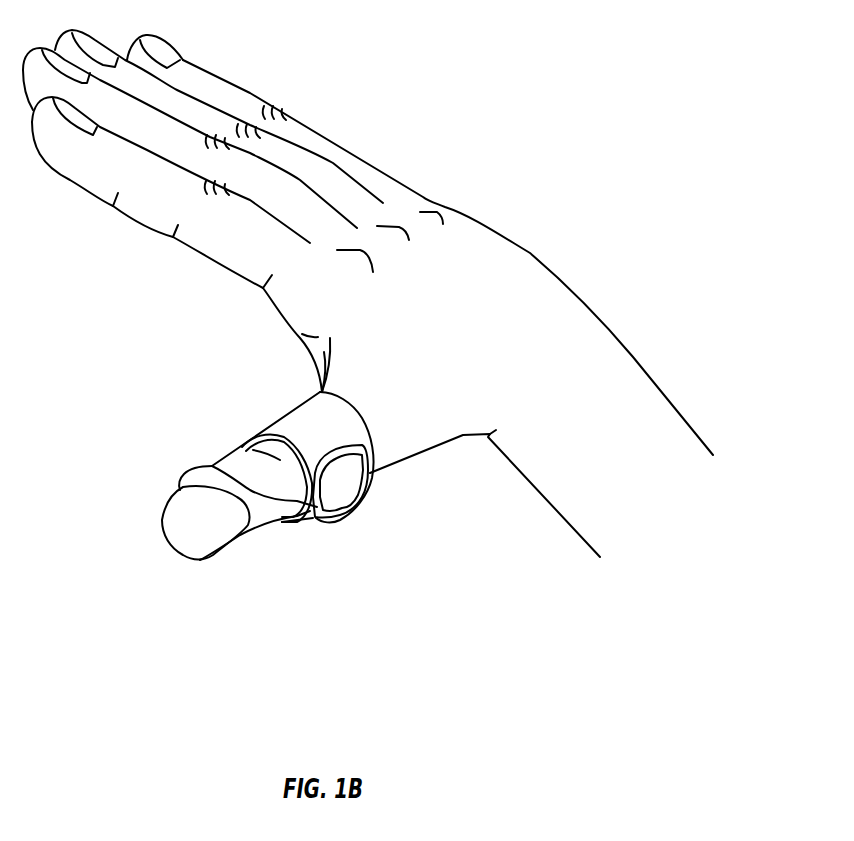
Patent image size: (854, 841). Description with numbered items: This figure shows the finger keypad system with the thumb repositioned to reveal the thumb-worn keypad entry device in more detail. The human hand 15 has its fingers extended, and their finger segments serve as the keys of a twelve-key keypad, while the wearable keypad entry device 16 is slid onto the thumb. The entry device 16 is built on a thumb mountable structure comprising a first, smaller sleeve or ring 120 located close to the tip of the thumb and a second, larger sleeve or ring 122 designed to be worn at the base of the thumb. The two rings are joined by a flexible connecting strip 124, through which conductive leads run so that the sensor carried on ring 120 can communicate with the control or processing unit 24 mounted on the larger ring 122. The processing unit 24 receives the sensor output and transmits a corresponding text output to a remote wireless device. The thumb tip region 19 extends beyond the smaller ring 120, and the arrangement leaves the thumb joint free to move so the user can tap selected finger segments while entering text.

The human hand 15 is at (445, 185).
The wearable keypad entry device 16 is at (266, 483).
The thumb tip 19 is at (170, 523).
The control or processing unit 24 is at (345, 495).
The first sleeve or ring 120 is at (183, 480).
The second sleeve or ring 122 is at (298, 416).
The flexible connecting strip 124 is at (280, 503).